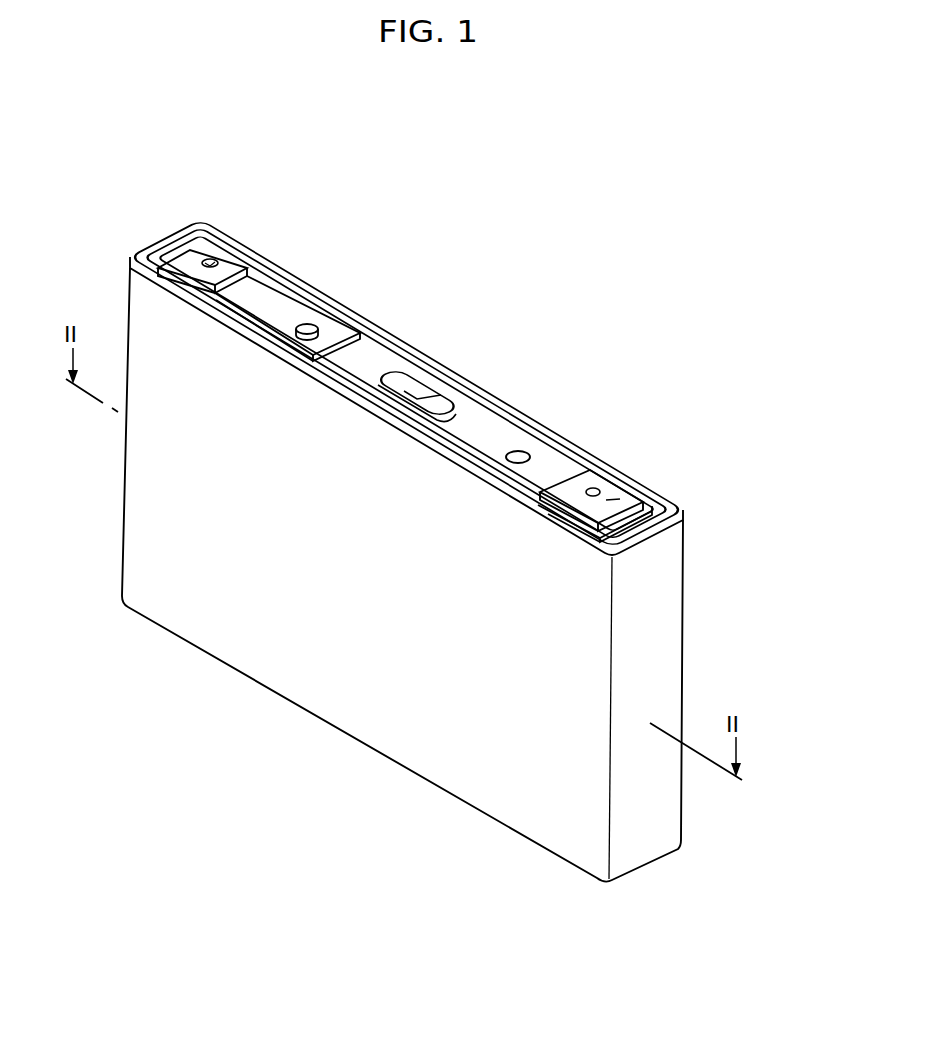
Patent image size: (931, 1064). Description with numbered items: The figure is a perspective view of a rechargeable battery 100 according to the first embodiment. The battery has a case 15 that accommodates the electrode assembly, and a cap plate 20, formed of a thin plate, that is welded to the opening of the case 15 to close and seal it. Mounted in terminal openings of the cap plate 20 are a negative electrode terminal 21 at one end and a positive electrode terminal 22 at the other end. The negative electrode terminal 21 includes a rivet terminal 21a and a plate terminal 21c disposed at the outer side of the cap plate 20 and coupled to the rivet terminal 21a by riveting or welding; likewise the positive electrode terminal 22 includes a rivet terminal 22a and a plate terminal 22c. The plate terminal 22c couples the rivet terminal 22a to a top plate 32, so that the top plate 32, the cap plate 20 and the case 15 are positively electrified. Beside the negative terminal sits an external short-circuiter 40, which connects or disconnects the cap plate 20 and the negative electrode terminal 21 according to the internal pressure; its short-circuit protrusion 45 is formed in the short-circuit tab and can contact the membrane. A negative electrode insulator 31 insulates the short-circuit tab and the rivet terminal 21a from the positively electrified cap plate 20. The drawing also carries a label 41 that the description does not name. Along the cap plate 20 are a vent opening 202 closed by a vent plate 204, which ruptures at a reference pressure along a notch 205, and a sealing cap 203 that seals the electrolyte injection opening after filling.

The rechargeable battery 100 is at (519, 238).
The case 15 is at (333, 685).
The cap plate 20 is at (380, 365).
The negative electrode terminal 21 is at (215, 253).
The rivet terminal 21a is at (208, 260).
The plate terminal 21c is at (232, 264).
The positive electrode terminal 22 is at (596, 486).
The rivet terminal 22a is at (601, 489).
The plate terminal 22c is at (630, 498).
The negative electrode insulator 31 is at (272, 278).
The top plate 32 is at (613, 522).
The external short-circuiter 40 is at (303, 292).
The short circuit hole 41 is at (331, 332).
The short-circuit protrusion 45 is at (313, 325).
The vent opening 202 is at (398, 386).
The sealing cap 203 is at (519, 451).
The vent plate 204 is at (426, 400).
The notch 205 is at (432, 408).